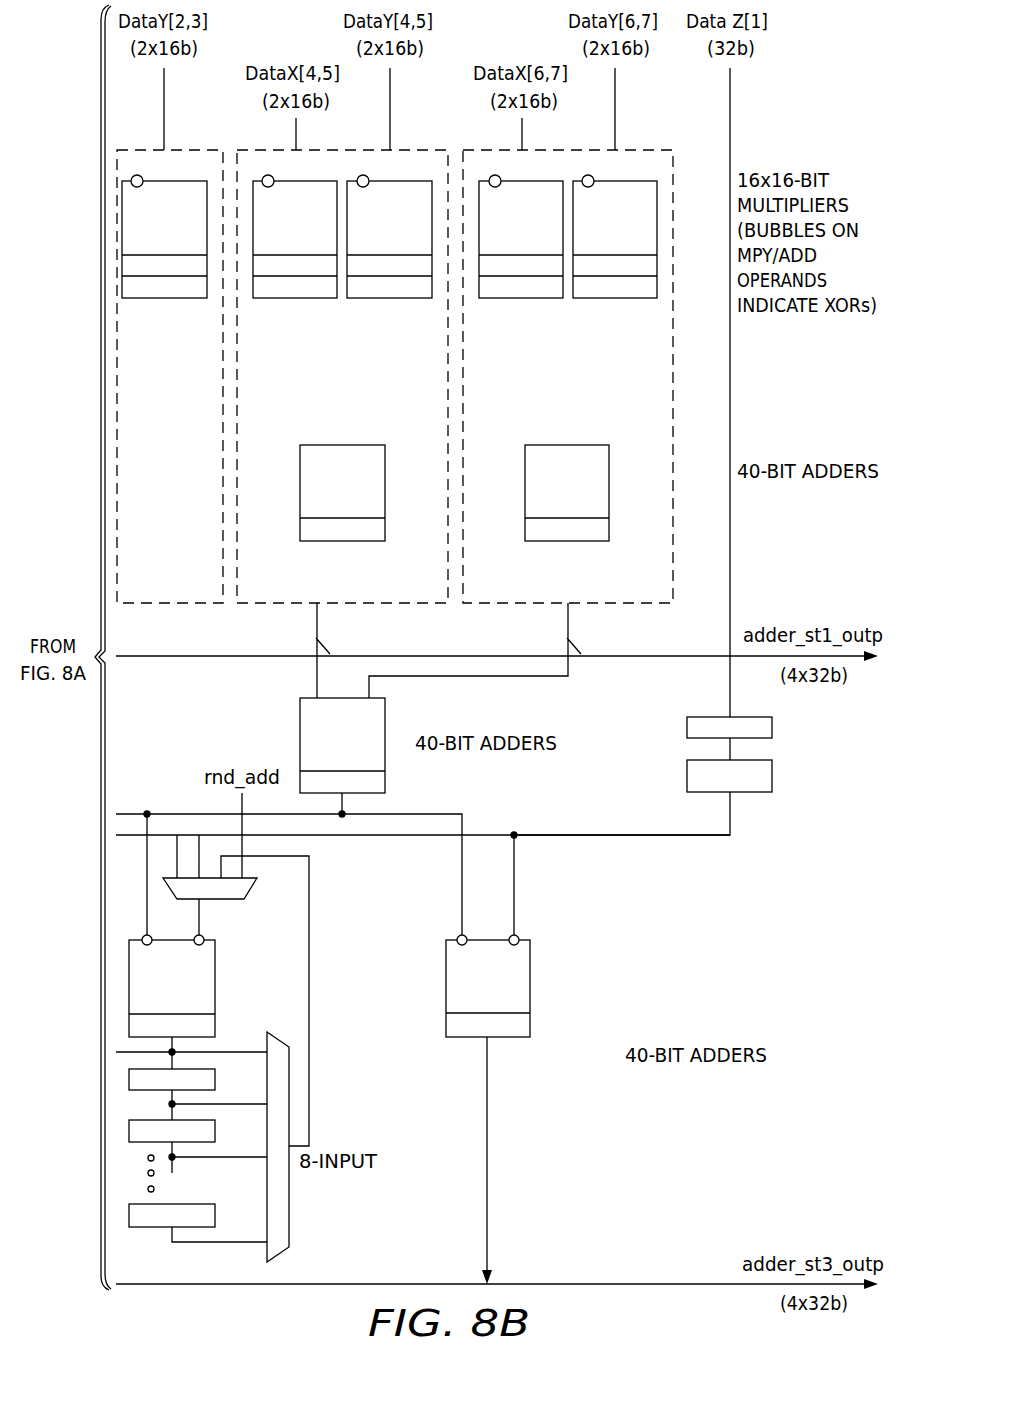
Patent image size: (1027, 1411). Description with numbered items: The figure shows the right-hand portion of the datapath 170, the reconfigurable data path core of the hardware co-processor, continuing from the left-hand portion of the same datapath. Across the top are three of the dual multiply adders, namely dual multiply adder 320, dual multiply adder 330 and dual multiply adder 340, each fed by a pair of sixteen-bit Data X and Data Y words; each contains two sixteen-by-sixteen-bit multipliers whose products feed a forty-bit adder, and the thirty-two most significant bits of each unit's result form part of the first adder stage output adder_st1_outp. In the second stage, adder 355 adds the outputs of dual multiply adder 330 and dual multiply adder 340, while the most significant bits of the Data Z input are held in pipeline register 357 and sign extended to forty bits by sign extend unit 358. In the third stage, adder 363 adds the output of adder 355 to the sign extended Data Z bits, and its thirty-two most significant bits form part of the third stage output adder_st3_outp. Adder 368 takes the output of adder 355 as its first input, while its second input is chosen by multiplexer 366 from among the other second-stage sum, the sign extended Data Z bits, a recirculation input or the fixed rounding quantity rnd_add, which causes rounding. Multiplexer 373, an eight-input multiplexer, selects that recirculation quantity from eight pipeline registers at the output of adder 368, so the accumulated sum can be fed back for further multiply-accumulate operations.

The datapath 170 is at (68, 42).
The dual multiply adder 320 is at (207, 589).
The dual multiply adder 330 is at (433, 589).
The dual multiply adder 340 is at (658, 589).
The adder 355 is at (299, 745).
The pipeline register 357 is at (773, 727).
The sign extend unit 358 is at (773, 777).
The adder 363 is at (531, 988).
The multiplexer 366 is at (238, 900).
The adder 368 is at (216, 988).
The multiplexer 373 is at (290, 1215).